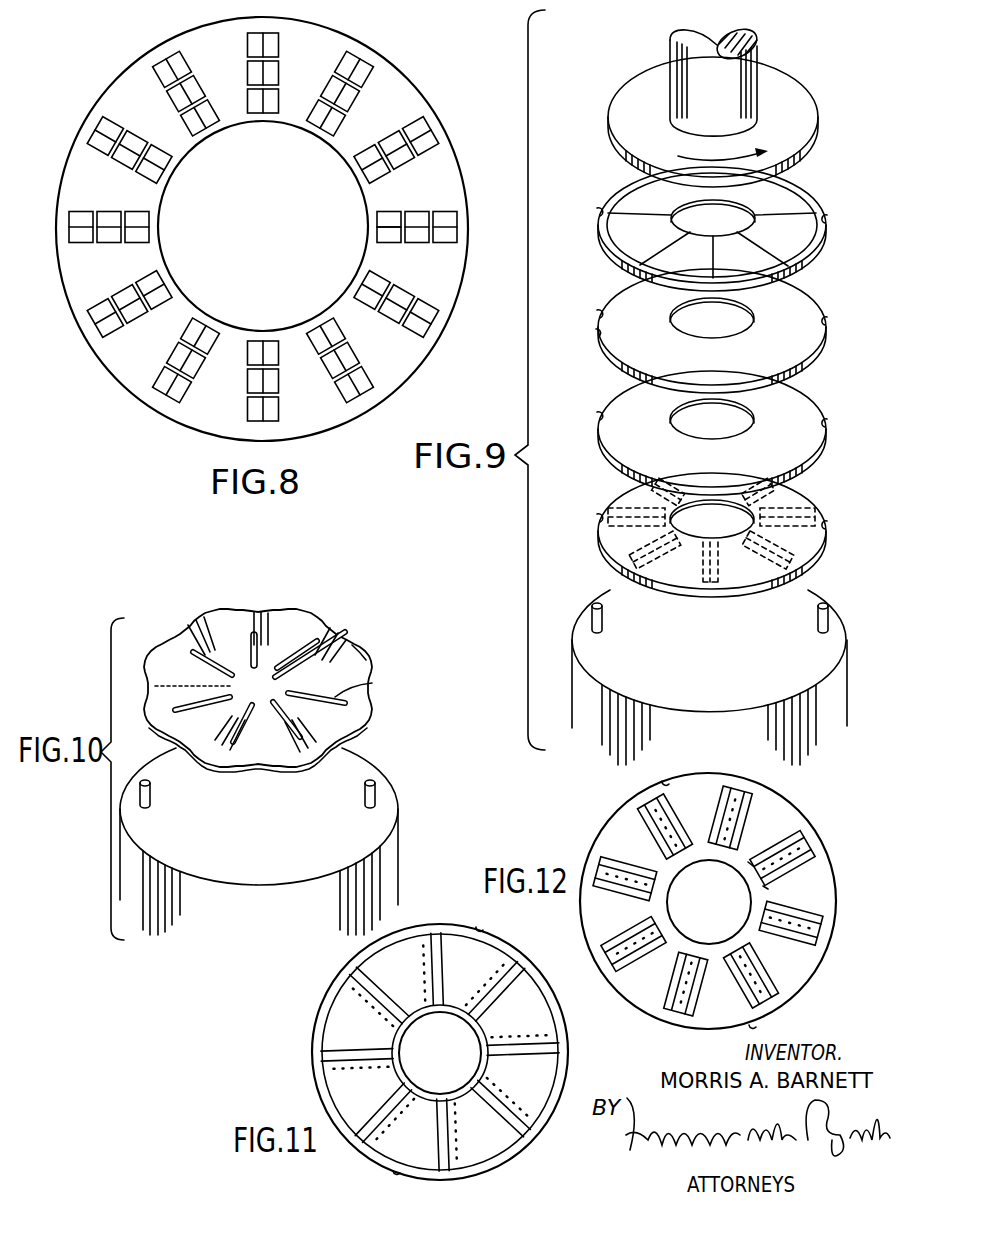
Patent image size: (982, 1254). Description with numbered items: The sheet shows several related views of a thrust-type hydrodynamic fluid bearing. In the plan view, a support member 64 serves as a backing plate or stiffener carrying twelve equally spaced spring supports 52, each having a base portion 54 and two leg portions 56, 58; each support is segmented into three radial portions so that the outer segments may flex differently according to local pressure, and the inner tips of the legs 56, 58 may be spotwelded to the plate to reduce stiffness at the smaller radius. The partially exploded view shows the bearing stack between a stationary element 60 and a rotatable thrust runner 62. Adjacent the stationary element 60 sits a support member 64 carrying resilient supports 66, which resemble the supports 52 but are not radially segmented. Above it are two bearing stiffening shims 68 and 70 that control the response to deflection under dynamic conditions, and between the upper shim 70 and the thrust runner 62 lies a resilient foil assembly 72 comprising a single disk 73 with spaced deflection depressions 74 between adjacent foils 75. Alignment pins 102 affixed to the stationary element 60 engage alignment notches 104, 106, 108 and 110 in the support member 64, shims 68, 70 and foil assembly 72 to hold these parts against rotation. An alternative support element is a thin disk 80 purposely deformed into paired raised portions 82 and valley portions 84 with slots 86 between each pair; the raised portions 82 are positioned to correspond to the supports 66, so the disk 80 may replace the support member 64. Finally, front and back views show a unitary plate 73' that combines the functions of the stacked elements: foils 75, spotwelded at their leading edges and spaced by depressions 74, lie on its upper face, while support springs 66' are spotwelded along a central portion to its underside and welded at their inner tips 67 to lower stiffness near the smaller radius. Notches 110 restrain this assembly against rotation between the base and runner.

In FIG. 8, the spring support 52 is at (286, 227).
In FIG. 8, the base portion 54 is at (454, 230).
In FIG. 8, the leg portion 56 is at (389, 214).
In FIG. 8, the leg portion 58 is at (389, 244).
In FIG. 9, the stationary element 60 is at (720, 669).
In FIG. 10, the stationary element 60 is at (288, 841).
In FIG. 9, the rotatable element 62 is at (612, 120).
In FIG. 8, the support member 64 is at (394, 90).
In FIG. 9, the support member 64 is at (722, 535).
In FIG. 9, the resilient support 66 is at (679, 530).
In FIG. 12, the support spring 66' is at (736, 901).
In FIG. 12, the inner tip 67 is at (750, 862).
In FIG. 9, the bearing stiffening shim 68 is at (722, 433).
In FIG. 9, the bearing stiffening shim 70 is at (722, 331).
In FIG. 9, the resilient foil assembly 72 is at (722, 224).
In FIG. 9, the disk 73 is at (685, 229).
In FIG. 11, the plate 73' is at (425, 1052).
In FIG. 9, the deflection depression 74 is at (665, 233).
In FIG. 11, the deflection depression 74 is at (551, 1049).
In FIG. 9, the foil 75 is at (675, 255).
In FIG. 11, the foil 75 is at (543, 1022).
In FIG. 10, the thin disk 80 is at (279, 695).
In FIG. 10, the raised portion 82 is at (345, 636).
In FIG. 10, the valley portion 84 is at (296, 634).
In FIG. 10, the slot 86 is at (372, 683).
In FIG. 9, the alignment pin 102 is at (829, 619).
In FIG. 10, the alignment pin 102 is at (378, 793).
In FIG. 9, the alignment notch 104 is at (828, 526).
In FIG. 9, the alignment notch 106 is at (828, 424).
In FIG. 9, the alignment notch 108 is at (828, 322).
In FIG. 9, the alignment notch 110 is at (828, 220).
In FIG. 11, the alignment notch 110 is at (396, 1173).
In FIG. 12, the alignment notch 110 is at (758, 1028).